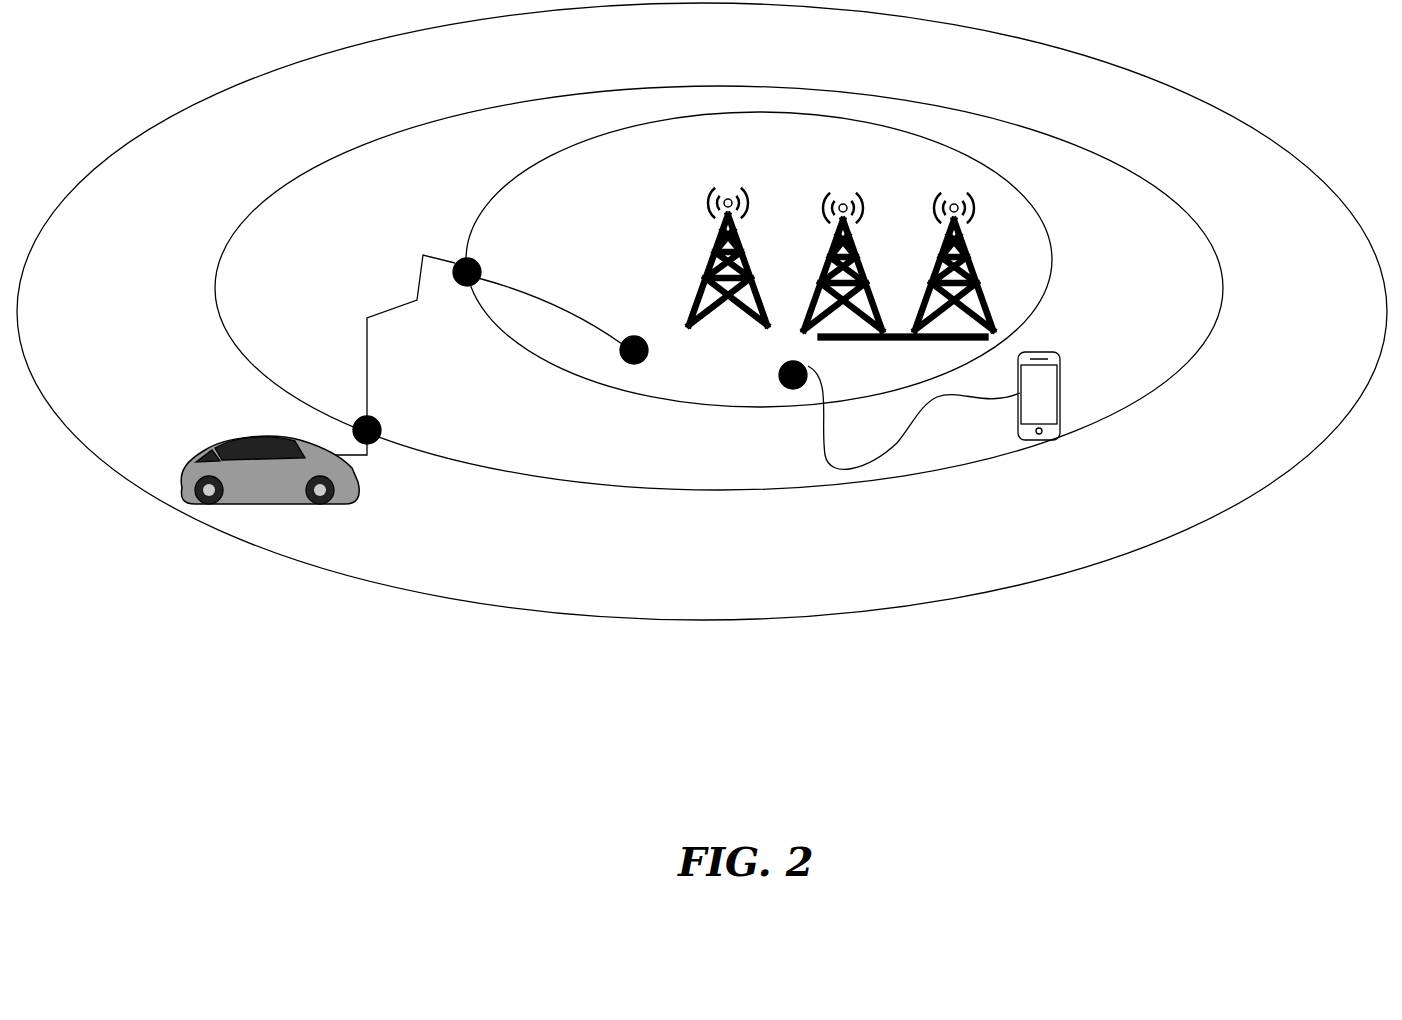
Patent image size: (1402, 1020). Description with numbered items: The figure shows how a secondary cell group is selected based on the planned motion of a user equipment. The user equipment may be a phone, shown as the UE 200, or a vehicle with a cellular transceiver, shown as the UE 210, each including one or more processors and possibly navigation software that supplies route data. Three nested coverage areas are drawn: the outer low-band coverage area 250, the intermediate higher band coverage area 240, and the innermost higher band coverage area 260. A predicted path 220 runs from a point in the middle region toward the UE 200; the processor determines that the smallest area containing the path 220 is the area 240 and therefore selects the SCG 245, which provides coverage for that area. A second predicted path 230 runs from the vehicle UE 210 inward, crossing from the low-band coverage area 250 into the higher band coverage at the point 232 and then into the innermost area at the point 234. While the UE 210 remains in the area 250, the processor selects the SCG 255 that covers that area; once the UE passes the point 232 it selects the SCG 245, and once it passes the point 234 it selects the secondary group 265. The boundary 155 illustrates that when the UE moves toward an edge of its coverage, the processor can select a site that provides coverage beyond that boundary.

The boundary 155 is at (842, 400).
The UE 200 is at (1040, 352).
The UE 210 is at (205, 448).
The path 220 is at (825, 458).
The path 230 is at (367, 318).
The point 232 is at (357, 418).
The point 234 is at (462, 258).
The coverage area 240 is at (343, 158).
The SCG 245 is at (690, 313).
The coverage area 250 is at (130, 148).
The SCG 255 is at (820, 293).
The coverage area 260 is at (502, 197).
The secondary group 265 is at (975, 282).